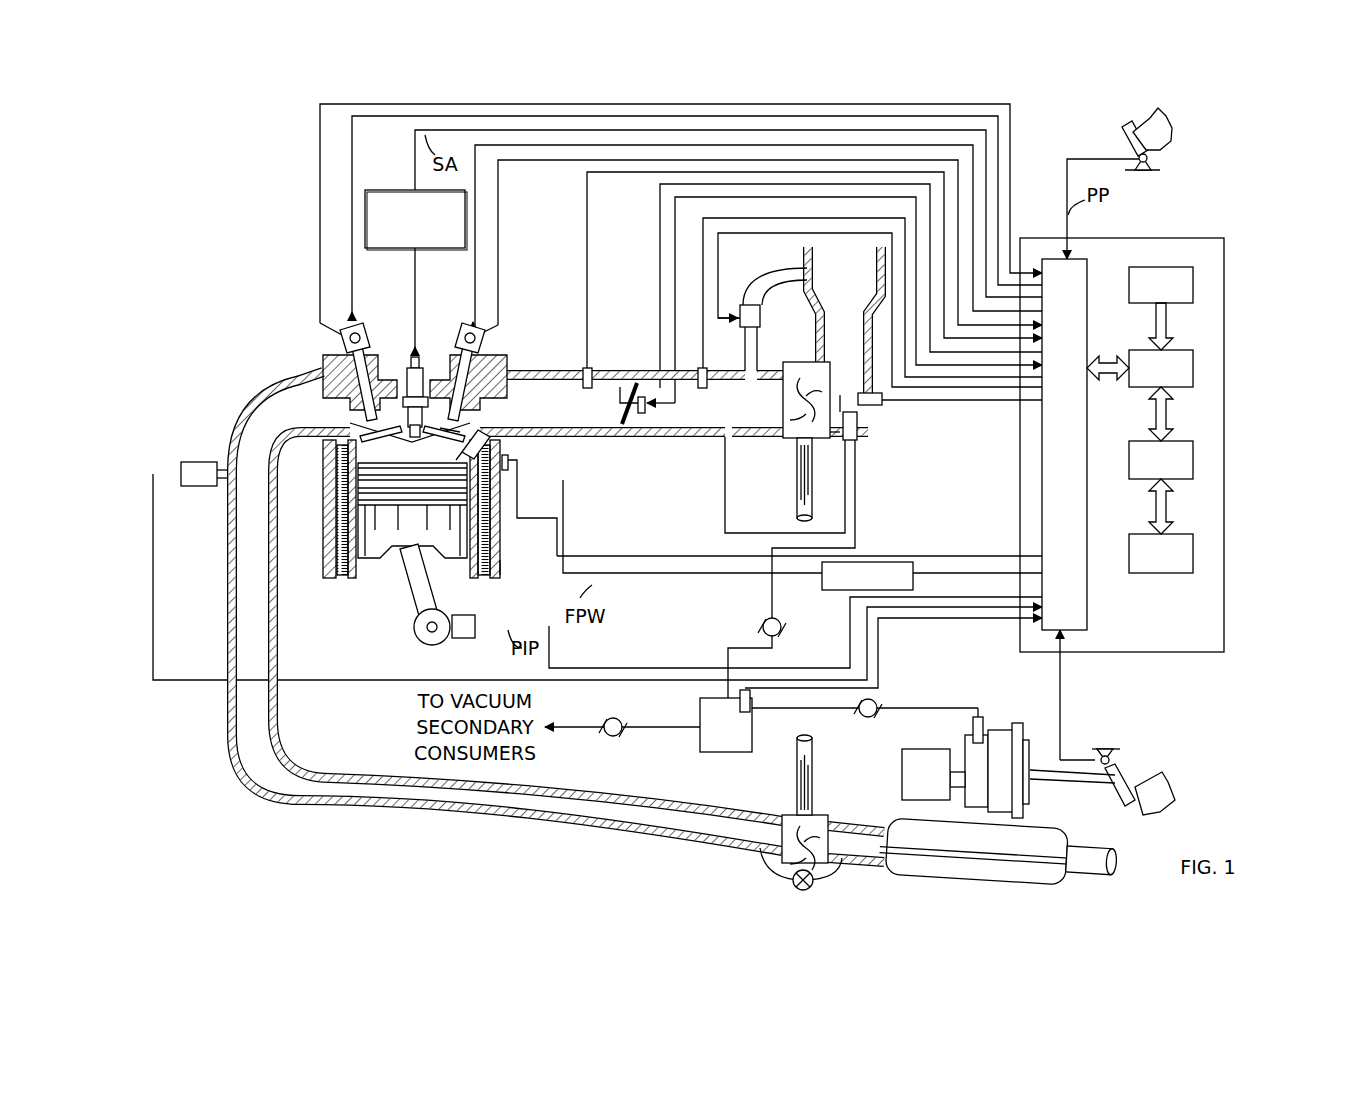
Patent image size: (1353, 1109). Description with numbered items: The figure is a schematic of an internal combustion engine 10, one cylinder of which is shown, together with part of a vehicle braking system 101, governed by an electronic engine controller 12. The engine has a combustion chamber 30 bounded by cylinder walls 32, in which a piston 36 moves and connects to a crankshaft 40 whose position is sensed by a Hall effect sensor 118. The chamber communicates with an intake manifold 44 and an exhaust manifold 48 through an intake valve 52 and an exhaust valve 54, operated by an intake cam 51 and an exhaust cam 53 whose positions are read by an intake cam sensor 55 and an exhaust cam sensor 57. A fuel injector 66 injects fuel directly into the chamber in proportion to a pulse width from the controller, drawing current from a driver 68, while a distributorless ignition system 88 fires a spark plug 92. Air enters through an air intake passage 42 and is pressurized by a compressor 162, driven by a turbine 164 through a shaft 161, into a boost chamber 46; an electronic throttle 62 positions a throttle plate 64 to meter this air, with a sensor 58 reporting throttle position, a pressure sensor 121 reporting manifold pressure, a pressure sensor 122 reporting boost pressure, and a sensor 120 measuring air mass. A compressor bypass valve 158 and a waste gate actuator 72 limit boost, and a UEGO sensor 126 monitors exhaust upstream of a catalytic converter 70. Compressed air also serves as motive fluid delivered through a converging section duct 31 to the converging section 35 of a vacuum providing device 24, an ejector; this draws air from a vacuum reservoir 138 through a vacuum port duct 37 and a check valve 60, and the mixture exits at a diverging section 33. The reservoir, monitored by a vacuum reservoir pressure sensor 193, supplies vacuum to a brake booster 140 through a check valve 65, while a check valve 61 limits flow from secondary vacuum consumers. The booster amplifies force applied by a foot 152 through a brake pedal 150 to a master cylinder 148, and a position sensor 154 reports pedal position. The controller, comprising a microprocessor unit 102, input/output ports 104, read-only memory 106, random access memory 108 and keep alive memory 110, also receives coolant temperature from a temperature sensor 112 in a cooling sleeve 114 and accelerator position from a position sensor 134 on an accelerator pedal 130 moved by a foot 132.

The internal combustion engine 10 is at (262, 312).
The electronic engine controller 12 is at (1154, 429).
The vacuum providing device 24 is at (860, 440).
The combustion chamber 30 is at (410, 455).
The converging section duct 31 is at (748, 528).
The cylinder walls 32 is at (358, 580).
The diverging section 33 is at (840, 400).
The converging section 35 is at (840, 442).
The piston 36 is at (398, 548).
The vacuum port duct 37 is at (860, 548).
The crankshaft 40 is at (420, 642).
The air intake passage 42 is at (828, 290).
The intake manifold 44 is at (536, 418).
The intake boost chamber 46 is at (700, 416).
The exhaust manifold 48 is at (280, 423).
The intake cam 51 is at (470, 330).
The intake valve 52 is at (458, 416).
The exhaust cam 53 is at (355, 330).
The exhaust valve 54 is at (338, 395).
The intake cam sensor 55 is at (483, 338).
The exhaust cam sensor 57 is at (342, 337).
The throttle position sensor 58 is at (640, 420).
The check valve 60 is at (780, 621).
The check valve 61 is at (619, 735).
The electronic throttle 62 is at (623, 385).
The throttle plate 64 is at (627, 383).
The check valve 65 is at (862, 716).
The fuel injector 66 is at (487, 432).
The driver 68 is at (913, 576).
The catalytic converter 70 is at (890, 876).
The waste gate actuator 72 is at (790, 880).
The distributorless ignition system 88 is at (368, 192).
The spark plug 92 is at (420, 357).
The vehicle braking system 101 is at (1190, 707).
The microprocessor unit 102 is at (1195, 372).
The input/output ports 104 is at (1088, 262).
The read-only memory 106 is at (1195, 285).
The random access memory 108 is at (1195, 462).
The keep alive memory 110 is at (1195, 555).
The temperature sensor 112 is at (505, 475).
The cooling sleeve 114 is at (495, 560).
The Hall effect sensor 118 is at (462, 640).
The air mass sensor 120 is at (875, 405).
The pressure sensor 121 is at (582, 372).
The pressure sensor 122 is at (705, 370).
The Universal Exhaust Gas Oxygen sensor 126 is at (180, 466).
The accelerator pedal 130 is at (1157, 130).
The foot 132 is at (1172, 130).
The position sensor 134 is at (1152, 158).
The vacuum reservoir 138 is at (698, 706).
The brake booster 140 is at (1003, 730).
The master cylinder 148 is at (892, 755).
The brake pedal 150 is at (1145, 792).
The foot 152 is at (1175, 788).
The position sensor 154 is at (1093, 752).
The compressor bypass valve 158 is at (762, 318).
The shaft 161 is at (797, 450).
The compressor 162 is at (808, 362).
The turbine 164 is at (785, 815).
The vacuum reservoir pressure sensor 193 is at (755, 700).